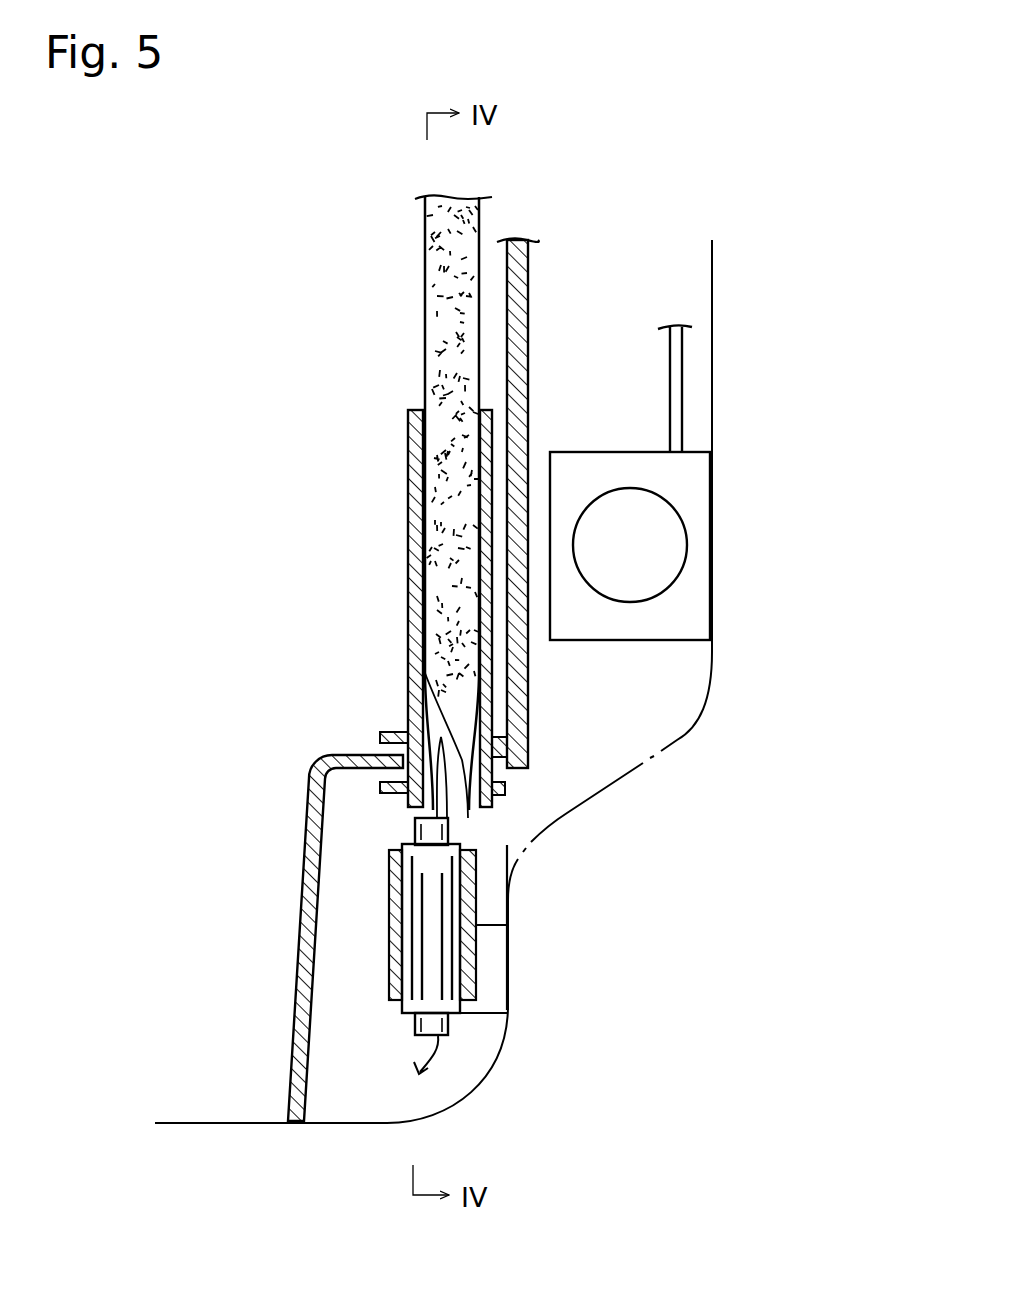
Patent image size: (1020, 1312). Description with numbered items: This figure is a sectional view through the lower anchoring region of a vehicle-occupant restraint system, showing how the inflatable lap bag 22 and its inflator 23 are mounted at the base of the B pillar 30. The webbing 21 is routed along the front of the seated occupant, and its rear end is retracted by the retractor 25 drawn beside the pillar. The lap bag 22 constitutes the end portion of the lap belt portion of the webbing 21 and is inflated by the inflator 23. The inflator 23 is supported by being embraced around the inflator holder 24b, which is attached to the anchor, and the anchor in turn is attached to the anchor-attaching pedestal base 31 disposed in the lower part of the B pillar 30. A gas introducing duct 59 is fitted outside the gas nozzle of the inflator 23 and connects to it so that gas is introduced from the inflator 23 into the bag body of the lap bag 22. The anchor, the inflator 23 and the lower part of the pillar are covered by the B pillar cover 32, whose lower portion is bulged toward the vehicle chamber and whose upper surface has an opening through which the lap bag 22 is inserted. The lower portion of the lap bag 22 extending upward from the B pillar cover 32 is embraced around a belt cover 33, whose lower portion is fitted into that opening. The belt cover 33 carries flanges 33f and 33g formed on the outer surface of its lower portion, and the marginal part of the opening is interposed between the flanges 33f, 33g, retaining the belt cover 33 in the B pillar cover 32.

The webbing 21 is at (668, 366).
The inflatable lap bag 22 is at (425, 272).
The inflator 23 is at (415, 940).
The inflator holder 24b is at (480, 960).
The retractor 25 is at (692, 615).
The B pillar 30 is at (712, 256).
The anchor-attaching pedestal base 31 is at (500, 1003).
The B pillar cover 32 is at (300, 990).
The belt cover 33 is at (408, 563).
The flange 33f is at (380, 735).
The flange 33g is at (505, 800).
The gas introducing duct 59 is at (415, 830).